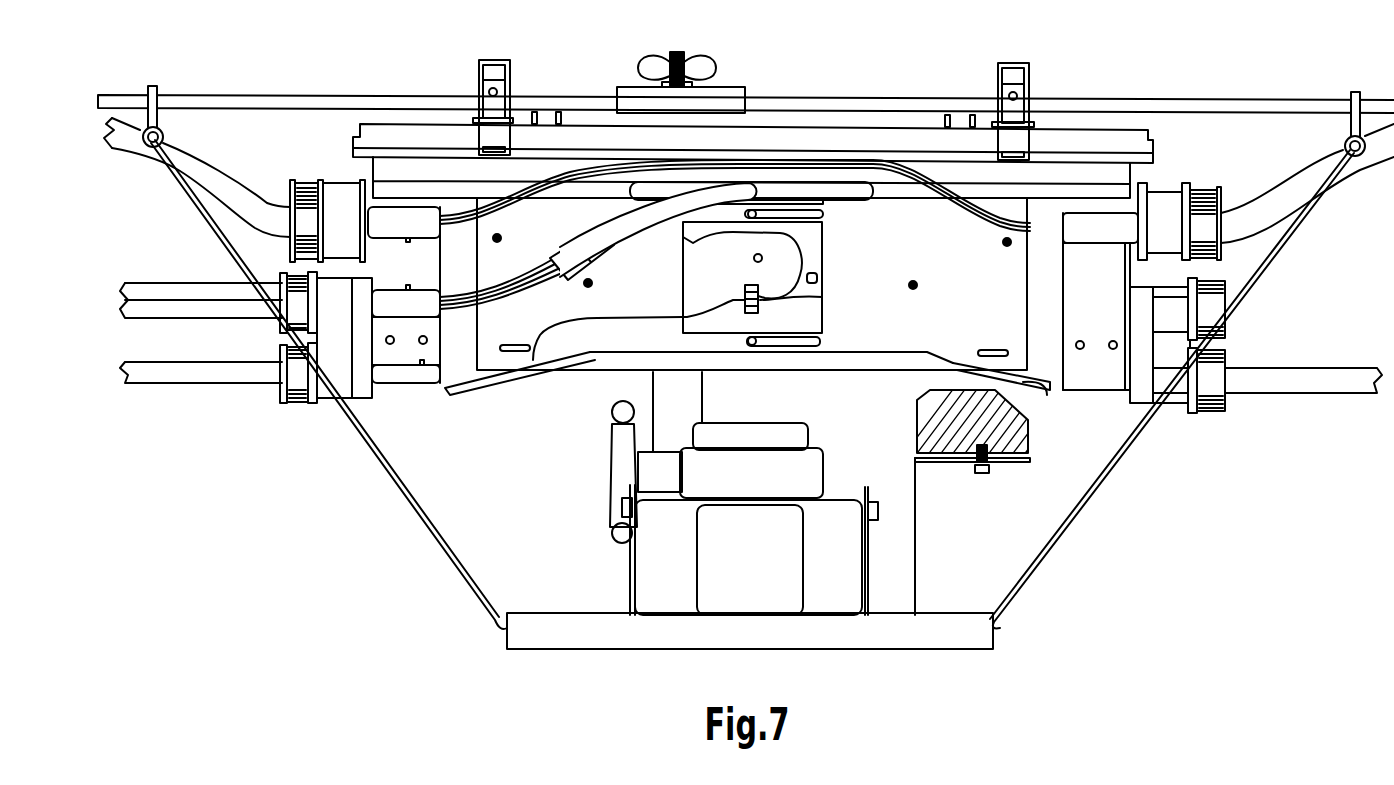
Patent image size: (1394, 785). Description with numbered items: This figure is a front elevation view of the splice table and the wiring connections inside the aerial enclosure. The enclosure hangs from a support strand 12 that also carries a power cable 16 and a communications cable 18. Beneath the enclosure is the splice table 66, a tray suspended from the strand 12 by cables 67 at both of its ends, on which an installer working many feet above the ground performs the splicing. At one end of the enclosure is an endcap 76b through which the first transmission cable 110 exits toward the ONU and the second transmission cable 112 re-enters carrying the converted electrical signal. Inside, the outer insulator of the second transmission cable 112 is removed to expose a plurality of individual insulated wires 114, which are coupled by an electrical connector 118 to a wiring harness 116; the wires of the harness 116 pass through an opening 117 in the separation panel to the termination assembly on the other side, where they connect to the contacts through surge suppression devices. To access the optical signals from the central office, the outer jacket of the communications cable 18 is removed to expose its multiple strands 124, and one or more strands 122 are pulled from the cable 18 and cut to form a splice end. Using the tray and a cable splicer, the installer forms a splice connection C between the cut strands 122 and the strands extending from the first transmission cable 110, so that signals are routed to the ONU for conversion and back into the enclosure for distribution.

The support strand 12 is at (224, 102).
The power cable 16 is at (118, 130).
The communications cable 18 is at (180, 372).
The splice table 66 is at (920, 633).
The cables 67 is at (428, 518).
The endcap 76b is at (333, 310).
The first transmission cable 110 is at (225, 295).
The second transmission cable 112 is at (158, 312).
The individual insulated wires 114 is at (528, 253).
The wiring harness 116 is at (710, 193).
The opening 117 is at (815, 188).
The electrical connector 118 is at (593, 237).
The strands 122 is at (600, 320).
The multiple strands 124 is at (456, 388).
The splice connection C is at (822, 297).